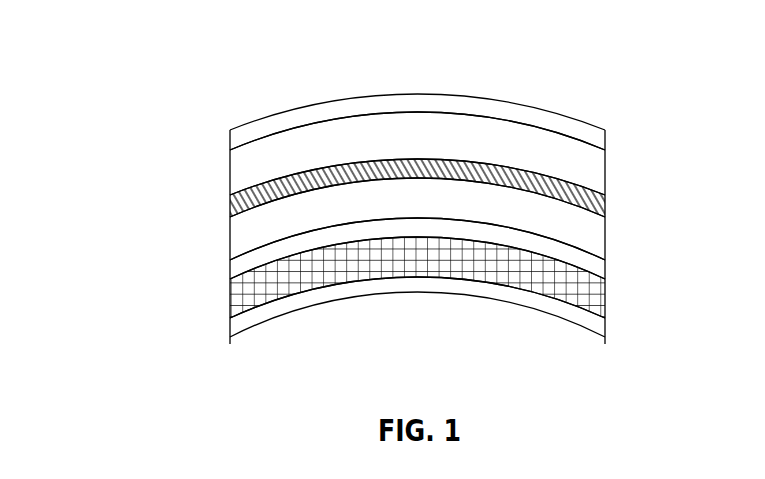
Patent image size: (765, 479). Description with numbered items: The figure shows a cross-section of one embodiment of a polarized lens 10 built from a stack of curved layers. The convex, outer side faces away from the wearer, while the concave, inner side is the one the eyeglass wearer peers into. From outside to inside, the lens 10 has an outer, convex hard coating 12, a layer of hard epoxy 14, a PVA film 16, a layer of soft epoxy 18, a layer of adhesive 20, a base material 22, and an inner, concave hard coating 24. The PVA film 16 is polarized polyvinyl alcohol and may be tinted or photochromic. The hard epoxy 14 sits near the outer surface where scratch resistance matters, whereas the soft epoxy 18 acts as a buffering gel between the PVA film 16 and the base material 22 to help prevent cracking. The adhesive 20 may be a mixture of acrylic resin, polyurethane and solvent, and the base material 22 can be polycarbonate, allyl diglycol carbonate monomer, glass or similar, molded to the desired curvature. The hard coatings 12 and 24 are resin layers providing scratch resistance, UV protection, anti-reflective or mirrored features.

The lens 10 is at (118, 84).
The outer, convex hard coating 12 is at (240, 135).
The layer of hard epoxy 14 is at (594, 170).
The PVA film 16 is at (238, 208).
The layer of soft epoxy 18 is at (594, 225).
The layer of adhesive 20 is at (242, 268).
The base material 22 is at (606, 300).
The inner, concave hard coating 24 is at (240, 330).